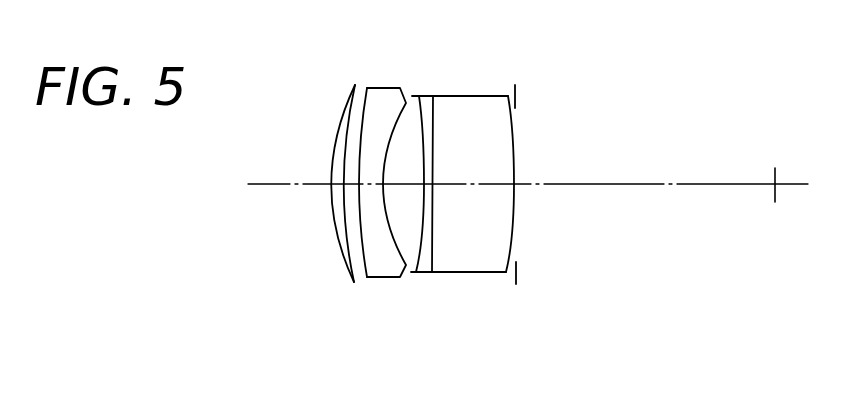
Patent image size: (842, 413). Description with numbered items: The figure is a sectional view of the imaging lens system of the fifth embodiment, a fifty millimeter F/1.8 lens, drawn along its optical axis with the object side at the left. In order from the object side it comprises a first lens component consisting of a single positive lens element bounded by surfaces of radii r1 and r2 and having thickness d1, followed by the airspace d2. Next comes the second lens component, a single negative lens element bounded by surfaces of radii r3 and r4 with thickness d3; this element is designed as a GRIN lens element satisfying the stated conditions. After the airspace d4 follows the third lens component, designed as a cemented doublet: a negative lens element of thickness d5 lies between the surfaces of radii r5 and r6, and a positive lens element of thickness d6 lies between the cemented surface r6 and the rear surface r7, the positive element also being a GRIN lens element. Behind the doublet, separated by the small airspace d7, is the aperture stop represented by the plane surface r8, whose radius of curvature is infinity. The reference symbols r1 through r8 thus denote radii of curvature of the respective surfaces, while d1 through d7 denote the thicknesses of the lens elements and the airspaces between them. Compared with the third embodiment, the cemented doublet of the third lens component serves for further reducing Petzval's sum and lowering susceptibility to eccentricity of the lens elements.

The radius of curvature r1 is at (333, 120).
The radius of curvature r2 is at (350, 112).
The radius of curvature r3 is at (367, 112).
The radius of curvature r4 is at (387, 140).
The radius of curvature r5 is at (423, 127).
The radius of curvature r6 is at (434, 127).
The radius of curvature r7 is at (512, 127).
The aperture stop r8 is at (518, 92).
The lens thickness d1 is at (327, 198).
The airspace d2 is at (350, 205).
The lens thickness d3 is at (375, 246).
The airspace d4 is at (398, 186).
The lens thickness d5 is at (428, 186).
The lens thickness d6 is at (458, 186).
The airspace d7 is at (515, 185).